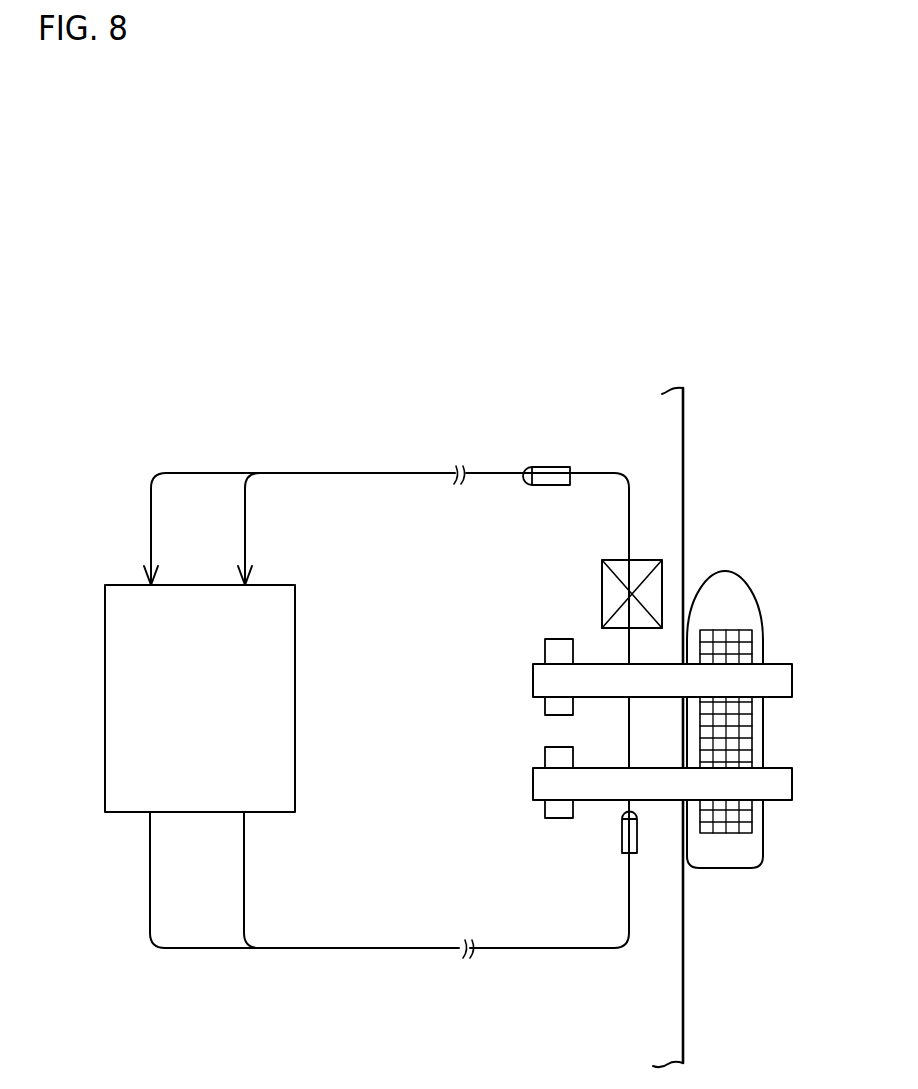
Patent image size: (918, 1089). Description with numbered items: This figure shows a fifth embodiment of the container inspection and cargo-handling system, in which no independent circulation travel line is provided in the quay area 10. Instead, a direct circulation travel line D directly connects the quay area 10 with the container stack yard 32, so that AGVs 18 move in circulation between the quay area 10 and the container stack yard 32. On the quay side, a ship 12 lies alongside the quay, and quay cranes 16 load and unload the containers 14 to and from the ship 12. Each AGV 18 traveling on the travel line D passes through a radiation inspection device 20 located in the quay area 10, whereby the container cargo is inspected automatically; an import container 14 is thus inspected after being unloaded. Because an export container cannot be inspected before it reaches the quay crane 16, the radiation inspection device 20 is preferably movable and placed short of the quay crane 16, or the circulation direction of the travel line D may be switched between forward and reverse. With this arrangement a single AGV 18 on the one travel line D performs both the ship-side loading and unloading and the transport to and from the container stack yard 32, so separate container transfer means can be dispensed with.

The quay area 10 is at (683, 985).
The ship 12 is at (752, 592).
The container 14 is at (752, 636).
The quay crane 16 is at (775, 683).
The AGV 18 is at (605, 877).
The radiation inspection device 20 is at (602, 590).
The container stack yard 32 is at (295, 753).
The direct circulation travel line D is at (345, 472).